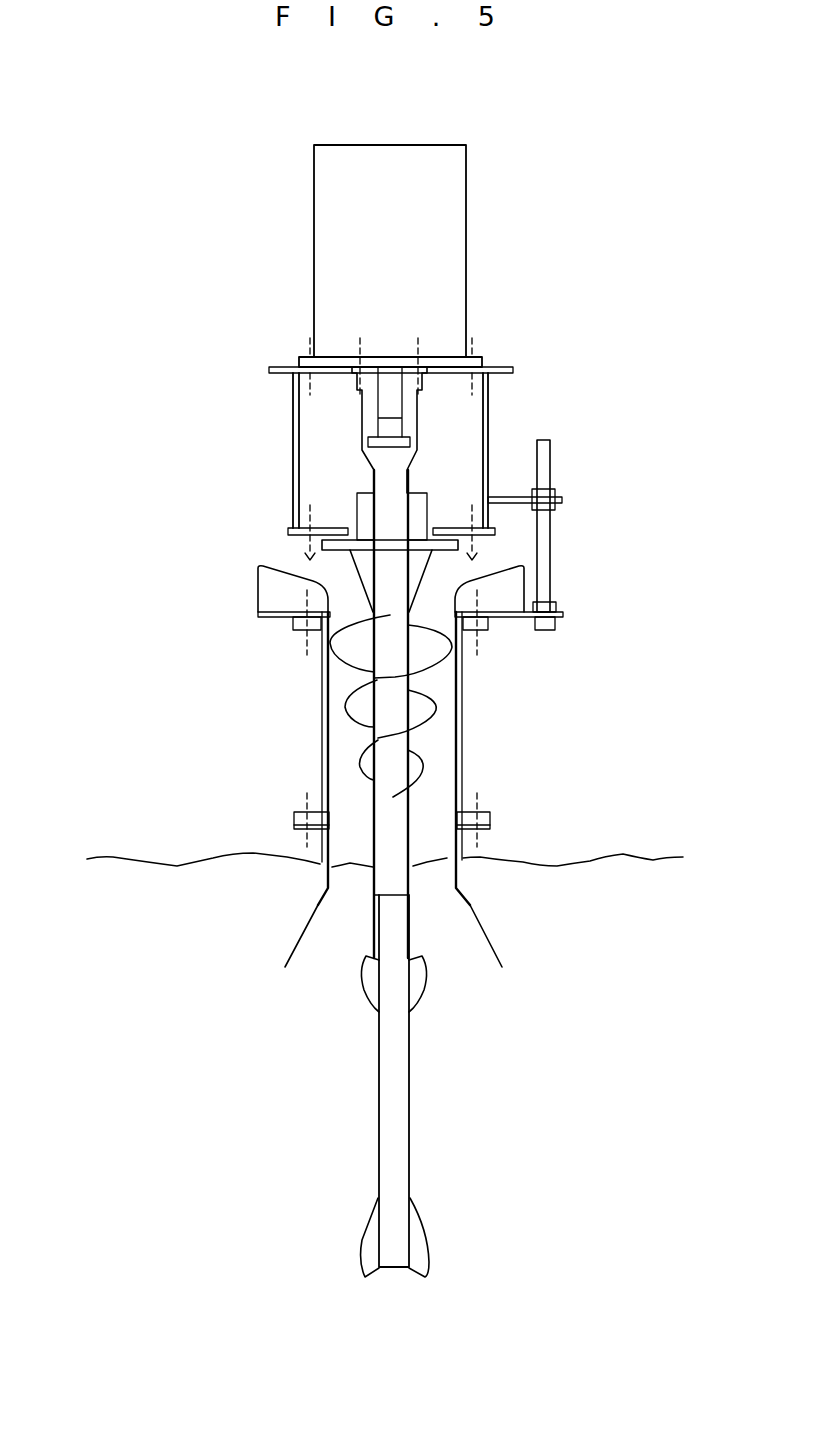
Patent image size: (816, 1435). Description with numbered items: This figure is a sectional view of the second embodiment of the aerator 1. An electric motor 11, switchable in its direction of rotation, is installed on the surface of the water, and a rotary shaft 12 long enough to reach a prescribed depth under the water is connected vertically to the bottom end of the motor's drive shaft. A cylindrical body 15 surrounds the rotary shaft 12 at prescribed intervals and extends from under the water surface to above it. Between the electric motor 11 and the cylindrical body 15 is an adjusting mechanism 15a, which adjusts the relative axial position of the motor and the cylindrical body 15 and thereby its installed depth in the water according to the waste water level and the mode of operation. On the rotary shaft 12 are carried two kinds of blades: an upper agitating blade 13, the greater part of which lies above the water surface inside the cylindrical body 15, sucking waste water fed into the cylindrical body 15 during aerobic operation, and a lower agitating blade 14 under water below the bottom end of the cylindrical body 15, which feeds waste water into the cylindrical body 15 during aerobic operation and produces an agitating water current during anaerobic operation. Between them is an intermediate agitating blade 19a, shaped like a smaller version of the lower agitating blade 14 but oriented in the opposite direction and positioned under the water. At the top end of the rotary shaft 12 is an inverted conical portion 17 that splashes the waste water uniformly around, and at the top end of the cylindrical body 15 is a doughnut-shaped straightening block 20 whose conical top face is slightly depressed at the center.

The aerator 1 is at (492, 343).
The electric motor 11 is at (450, 225).
The rotary shaft 12 is at (397, 1100).
The upper agitating blade 13 is at (428, 647).
The lower agitating blade 14 is at (368, 1245).
The cylindrical body 15 is at (327, 710).
The adjusting mechanism 15a is at (545, 565).
The inverted conical portion 17 is at (365, 578).
The intermediate agitating blade 19a is at (372, 997).
The straightening block 20 is at (266, 588).